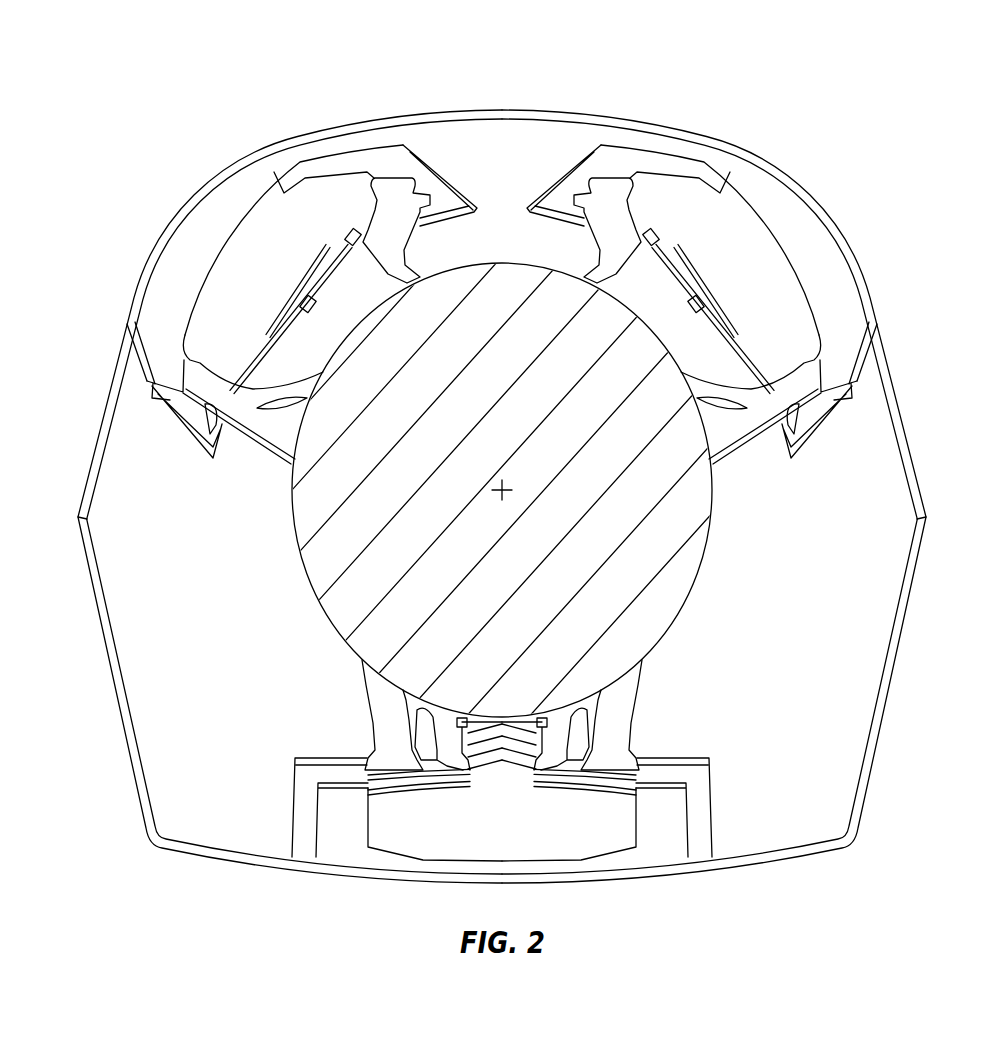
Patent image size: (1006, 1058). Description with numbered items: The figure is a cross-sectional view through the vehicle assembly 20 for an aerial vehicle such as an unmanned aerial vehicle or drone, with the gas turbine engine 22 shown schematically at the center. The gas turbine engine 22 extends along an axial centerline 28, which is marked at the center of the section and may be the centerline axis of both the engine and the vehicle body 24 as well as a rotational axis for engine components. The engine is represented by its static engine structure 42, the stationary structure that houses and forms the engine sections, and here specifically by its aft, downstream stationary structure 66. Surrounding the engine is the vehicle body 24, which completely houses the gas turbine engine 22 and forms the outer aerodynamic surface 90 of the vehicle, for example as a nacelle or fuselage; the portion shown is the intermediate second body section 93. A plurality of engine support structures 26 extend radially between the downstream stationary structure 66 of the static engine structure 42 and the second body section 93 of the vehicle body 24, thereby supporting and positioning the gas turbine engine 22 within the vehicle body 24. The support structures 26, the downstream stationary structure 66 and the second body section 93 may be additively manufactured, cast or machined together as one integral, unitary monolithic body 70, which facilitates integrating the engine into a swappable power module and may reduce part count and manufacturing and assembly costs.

The vehicle assembly 20 is at (501, 463).
The gas turbine engine 22 is at (501, 490).
The downstream stationary structure 66 is at (501, 490).
The vehicle body 24 is at (537, 463).
The second body section 93 is at (537, 463).
The engine support structures 26 is at (366, 207).
The axial centerline 28 is at (502, 499).
The static engine structure 42 is at (501, 490).
The monolithic body 70 is at (812, 141).
The outer aerodynamic surface 90 is at (428, 109).